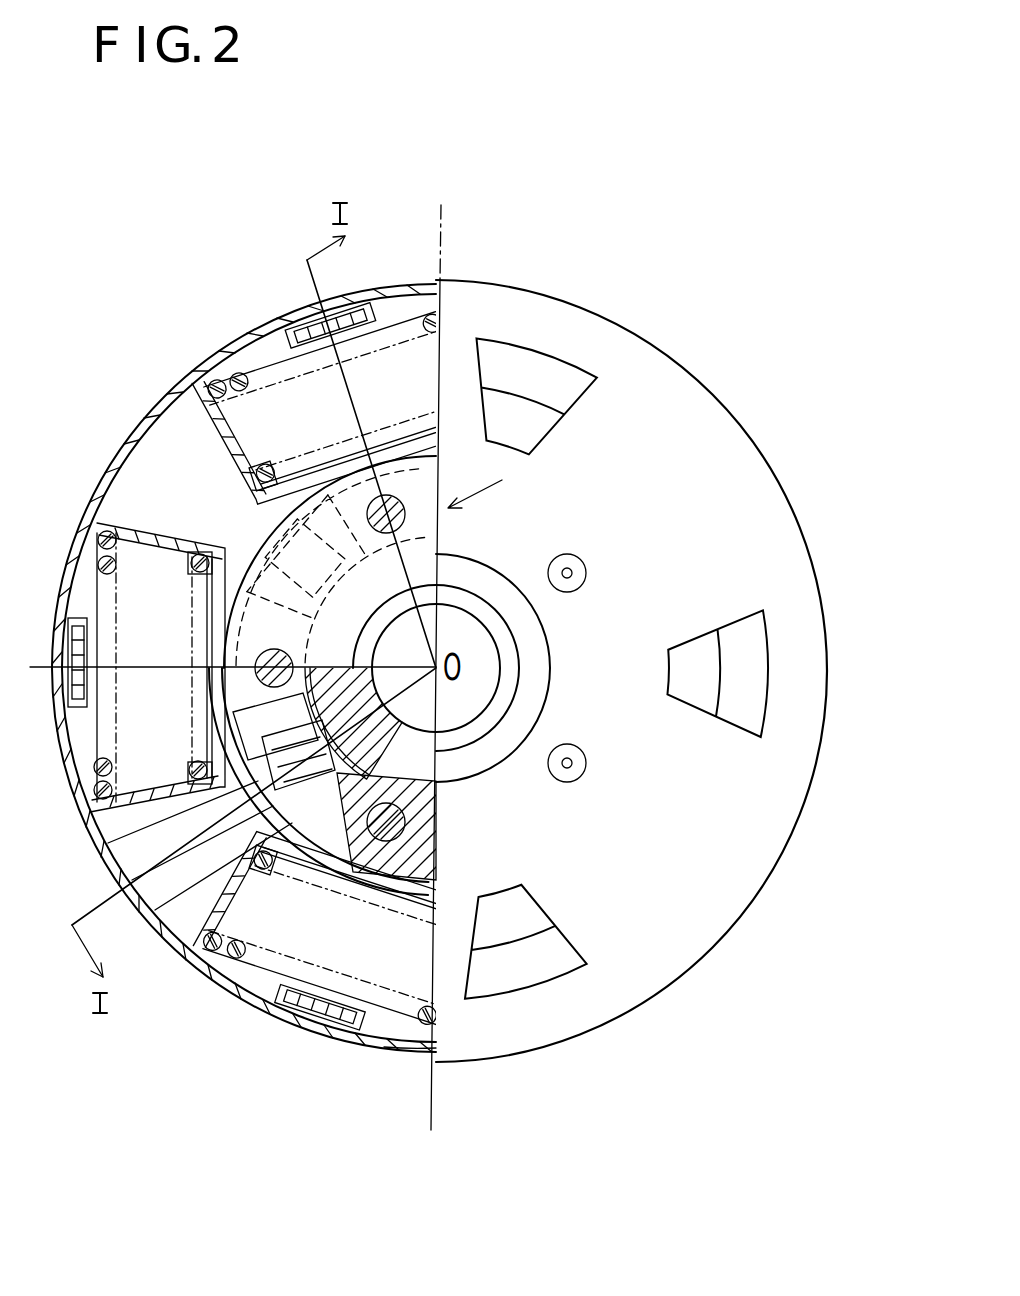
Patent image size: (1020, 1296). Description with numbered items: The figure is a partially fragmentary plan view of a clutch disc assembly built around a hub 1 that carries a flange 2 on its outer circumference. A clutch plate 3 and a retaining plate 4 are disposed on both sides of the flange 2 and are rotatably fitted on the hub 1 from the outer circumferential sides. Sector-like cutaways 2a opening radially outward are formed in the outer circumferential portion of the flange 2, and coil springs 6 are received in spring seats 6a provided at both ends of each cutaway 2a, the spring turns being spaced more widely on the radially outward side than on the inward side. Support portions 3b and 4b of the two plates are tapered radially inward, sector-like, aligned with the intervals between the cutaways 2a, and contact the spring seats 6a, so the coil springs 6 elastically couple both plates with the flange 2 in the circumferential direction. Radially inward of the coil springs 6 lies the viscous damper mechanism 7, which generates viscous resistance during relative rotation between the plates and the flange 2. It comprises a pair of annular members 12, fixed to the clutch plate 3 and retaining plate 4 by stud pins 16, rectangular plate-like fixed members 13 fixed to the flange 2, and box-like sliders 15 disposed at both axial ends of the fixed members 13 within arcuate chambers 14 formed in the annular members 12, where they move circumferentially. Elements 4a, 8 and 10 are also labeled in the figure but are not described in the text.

The hub 1 is at (475, 605).
The flange 2 is at (182, 867).
The sector-like cutaways 2a is at (410, 312).
The clutch plate 3 is at (236, 533).
The support portions 3b is at (180, 483).
The retaining plate 4 is at (685, 882).
The yoke rim 4a is at (348, 1035).
The support portions 4b is at (732, 650).
The coil springs 6 is at (215, 385).
The spring seats 6a is at (237, 423).
The viscous damper mechanism 7 is at (485, 481).
The bearing 8 is at (520, 700).
The connector 10 is at (355, 305).
The annular members 12 is at (435, 807).
The fixed members 13 is at (195, 813).
The arcuate chambers 14 is at (338, 818).
The sliders 15 is at (284, 741).
The stud pins 16 is at (588, 572).